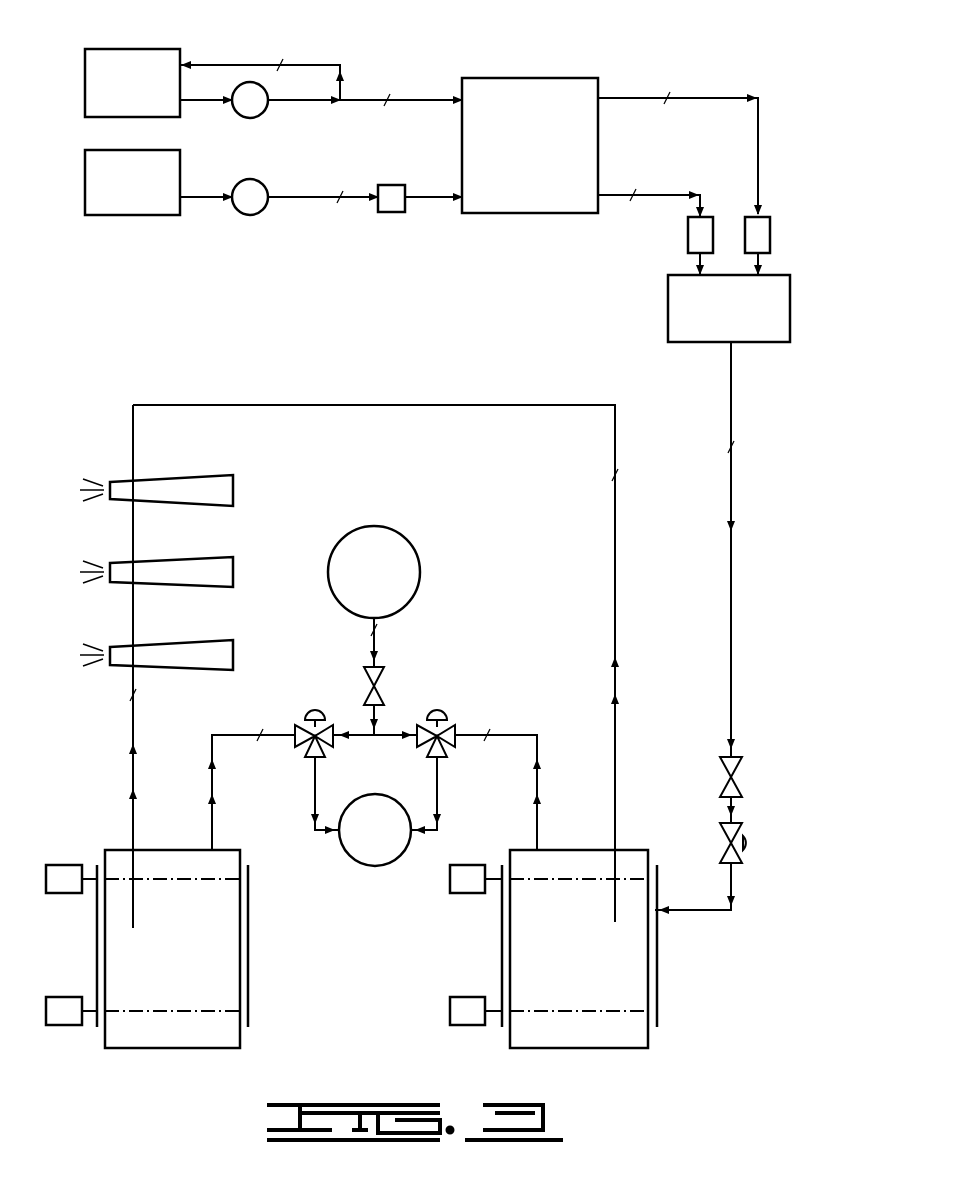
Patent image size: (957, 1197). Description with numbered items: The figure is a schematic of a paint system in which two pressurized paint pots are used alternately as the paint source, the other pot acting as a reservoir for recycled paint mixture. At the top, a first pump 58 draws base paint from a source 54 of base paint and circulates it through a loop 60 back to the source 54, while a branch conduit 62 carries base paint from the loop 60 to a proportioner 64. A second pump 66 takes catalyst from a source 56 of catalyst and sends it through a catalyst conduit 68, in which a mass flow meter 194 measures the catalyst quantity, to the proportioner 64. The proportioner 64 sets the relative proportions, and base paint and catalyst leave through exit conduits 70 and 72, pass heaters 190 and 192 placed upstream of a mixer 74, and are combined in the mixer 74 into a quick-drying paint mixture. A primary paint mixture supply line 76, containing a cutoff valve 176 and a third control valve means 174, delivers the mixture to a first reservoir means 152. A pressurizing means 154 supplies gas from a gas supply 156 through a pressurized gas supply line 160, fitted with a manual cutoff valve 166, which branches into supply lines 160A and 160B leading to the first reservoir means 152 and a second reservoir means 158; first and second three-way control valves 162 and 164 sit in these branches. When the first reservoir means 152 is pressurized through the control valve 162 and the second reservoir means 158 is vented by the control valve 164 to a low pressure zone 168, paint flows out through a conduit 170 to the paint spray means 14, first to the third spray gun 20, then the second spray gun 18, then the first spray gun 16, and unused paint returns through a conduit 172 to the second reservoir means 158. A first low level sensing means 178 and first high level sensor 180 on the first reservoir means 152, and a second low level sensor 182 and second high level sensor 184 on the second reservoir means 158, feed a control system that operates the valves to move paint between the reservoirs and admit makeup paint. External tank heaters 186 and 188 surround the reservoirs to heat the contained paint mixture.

The paint spray means 14 is at (178, 560).
The first spray gun 16 is at (191, 647).
The second spray gun 18 is at (197, 563).
The third spray gun 20 is at (200, 481).
The source of base paint 54 is at (153, 52).
The source of catalyst 56 is at (143, 216).
The first pump 58 is at (262, 108).
The loop 60 is at (281, 64).
The branch conduit 62 is at (388, 99).
The proportioner 64 is at (530, 145).
The second pump 66 is at (262, 205).
The catalyst conduit 68 is at (340, 196).
The exit conduit 70 is at (668, 97).
The exit conduit 72 is at (634, 194).
The mixer 74 is at (729, 308).
The primary paint mixture supply line 76 is at (734, 447).
The first reservoir means 152 is at (566, 949).
The pressurizing means 154 is at (391, 634).
The gas supply 156 is at (394, 538).
The second reservoir means 158 is at (161, 949).
The pressurized gas supply line 160 is at (377, 631).
The supply line branch 160A is at (489, 733).
The supply line branch 160B is at (260, 733).
The first three-way control valve 162 is at (433, 712).
The second three-way control valve 164 is at (318, 710).
The manual cutoff valve 166 is at (376, 676).
The low pressure zone 168 is at (362, 854).
The conduit 170 is at (618, 475).
The conduit 172 is at (131, 695).
The third control valve means 174 is at (756, 843).
The cutoff valve 176 is at (735, 767).
The first low level sensing means 178 is at (465, 1027).
The first high level sensor 180 is at (463, 895).
The second low level sensor 182 is at (67, 1027).
The second high level sensor 184 is at (66, 895).
The external tank heater 186 is at (660, 987).
The external tank heater 188 is at (250, 985).
The heater 190 is at (760, 232).
The heater 192 is at (692, 233).
The mass flow meter 194 is at (395, 213).